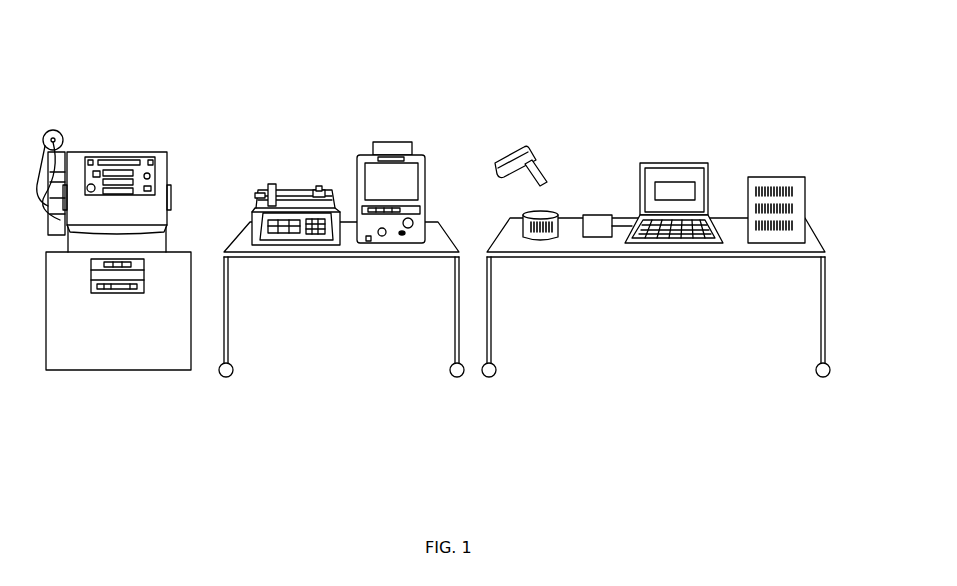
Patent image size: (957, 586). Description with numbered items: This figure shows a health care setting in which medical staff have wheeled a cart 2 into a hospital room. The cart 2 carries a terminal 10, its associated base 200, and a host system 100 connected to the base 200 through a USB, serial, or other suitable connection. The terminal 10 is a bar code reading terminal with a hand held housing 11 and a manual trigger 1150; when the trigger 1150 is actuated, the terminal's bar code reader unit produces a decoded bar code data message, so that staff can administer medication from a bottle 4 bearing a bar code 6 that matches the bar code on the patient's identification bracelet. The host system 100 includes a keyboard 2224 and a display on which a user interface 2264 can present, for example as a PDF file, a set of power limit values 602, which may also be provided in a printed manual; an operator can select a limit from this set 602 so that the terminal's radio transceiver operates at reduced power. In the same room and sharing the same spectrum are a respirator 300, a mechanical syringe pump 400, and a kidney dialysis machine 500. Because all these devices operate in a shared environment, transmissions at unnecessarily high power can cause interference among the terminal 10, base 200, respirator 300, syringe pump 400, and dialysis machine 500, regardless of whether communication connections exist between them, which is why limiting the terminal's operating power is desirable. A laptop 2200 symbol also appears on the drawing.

The cart 2 is at (832, 298).
The bottle 4 is at (530, 212).
The bar code 6 is at (527, 228).
The terminal 10 is at (529, 148).
The hand held housing 11 is at (546, 160).
The manual trigger 1150 is at (522, 176).
The host system 100 is at (698, 191).
The base 200 is at (600, 215).
The respirator 300 is at (394, 133).
The mechanical syringe pump 400 is at (293, 185).
The kidney dialysis machine 500 is at (120, 142).
The set of power limit values 602 is at (796, 222).
The laptop display 2200 is at (706, 171).
The keyboard 2224 is at (722, 232).
The user interface 2264 is at (663, 192).